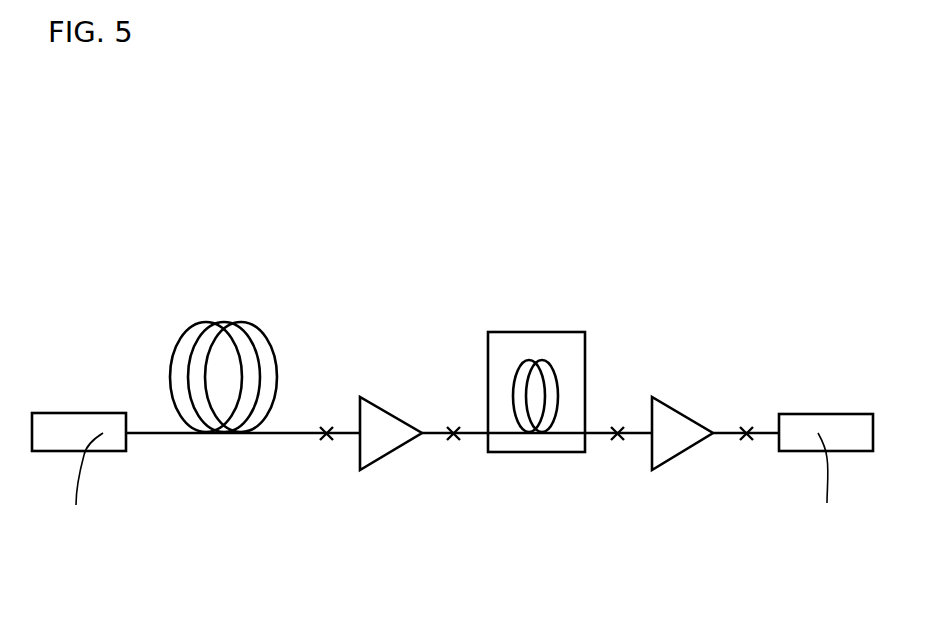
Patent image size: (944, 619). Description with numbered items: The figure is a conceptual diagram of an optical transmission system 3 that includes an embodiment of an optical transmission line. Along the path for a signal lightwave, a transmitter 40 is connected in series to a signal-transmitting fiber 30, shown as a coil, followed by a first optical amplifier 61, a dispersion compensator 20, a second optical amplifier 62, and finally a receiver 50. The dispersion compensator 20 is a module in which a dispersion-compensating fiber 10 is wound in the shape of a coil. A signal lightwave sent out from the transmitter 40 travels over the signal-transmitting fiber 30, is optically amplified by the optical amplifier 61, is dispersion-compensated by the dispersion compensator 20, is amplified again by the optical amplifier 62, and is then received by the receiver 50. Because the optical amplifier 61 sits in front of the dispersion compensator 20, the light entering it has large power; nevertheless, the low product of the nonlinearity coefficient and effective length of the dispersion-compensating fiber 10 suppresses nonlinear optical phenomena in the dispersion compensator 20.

The optical transmission system 3 is at (732, 237).
The dispersion-compensating fiber 10 is at (557, 380).
The dispersion compensator 20 is at (585, 336).
The signal-transmitting fiber 30 is at (268, 336).
The transmitter 40 is at (80, 413).
The receiver 50 is at (828, 414).
The optical amplifier 61 is at (390, 412).
The optical amplifier 62 is at (682, 412).